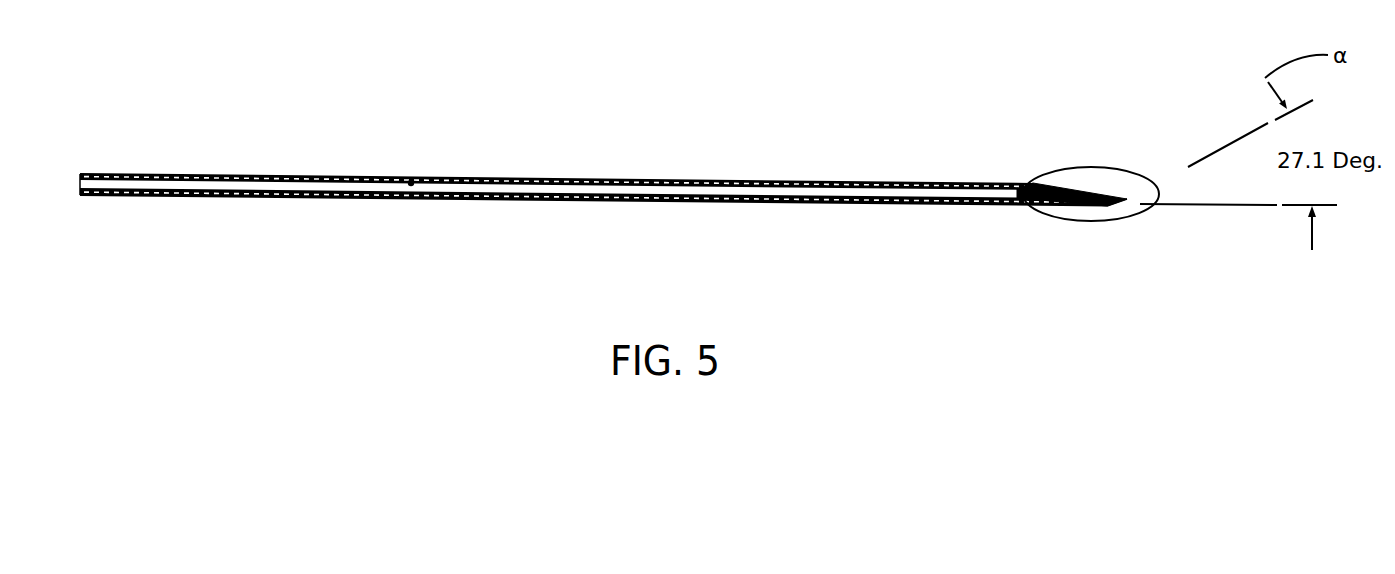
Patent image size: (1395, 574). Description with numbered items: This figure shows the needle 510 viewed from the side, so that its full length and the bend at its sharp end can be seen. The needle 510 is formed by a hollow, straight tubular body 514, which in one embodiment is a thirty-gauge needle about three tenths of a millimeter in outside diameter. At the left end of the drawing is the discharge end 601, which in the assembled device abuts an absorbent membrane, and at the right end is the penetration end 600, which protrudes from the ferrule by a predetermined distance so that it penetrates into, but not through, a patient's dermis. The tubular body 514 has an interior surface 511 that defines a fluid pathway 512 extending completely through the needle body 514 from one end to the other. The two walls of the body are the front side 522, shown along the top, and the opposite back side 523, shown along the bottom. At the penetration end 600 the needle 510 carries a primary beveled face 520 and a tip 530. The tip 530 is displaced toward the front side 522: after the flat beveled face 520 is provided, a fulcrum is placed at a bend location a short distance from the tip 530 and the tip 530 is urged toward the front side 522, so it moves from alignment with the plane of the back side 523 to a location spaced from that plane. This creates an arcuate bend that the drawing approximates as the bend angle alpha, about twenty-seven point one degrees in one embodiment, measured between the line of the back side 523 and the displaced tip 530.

The needle 510 is at (327, 197).
The interior surface 511 is at (420, 180).
The fluid pathway 512 is at (685, 188).
The tubular body 514 is at (577, 200).
The primary beveled face 520 is at (1072, 187).
The front side 522 is at (873, 182).
The back side 523 is at (823, 203).
The tip 530 is at (1145, 187).
The penetration end 600 is at (1110, 203).
The discharge end 601 is at (82, 190).